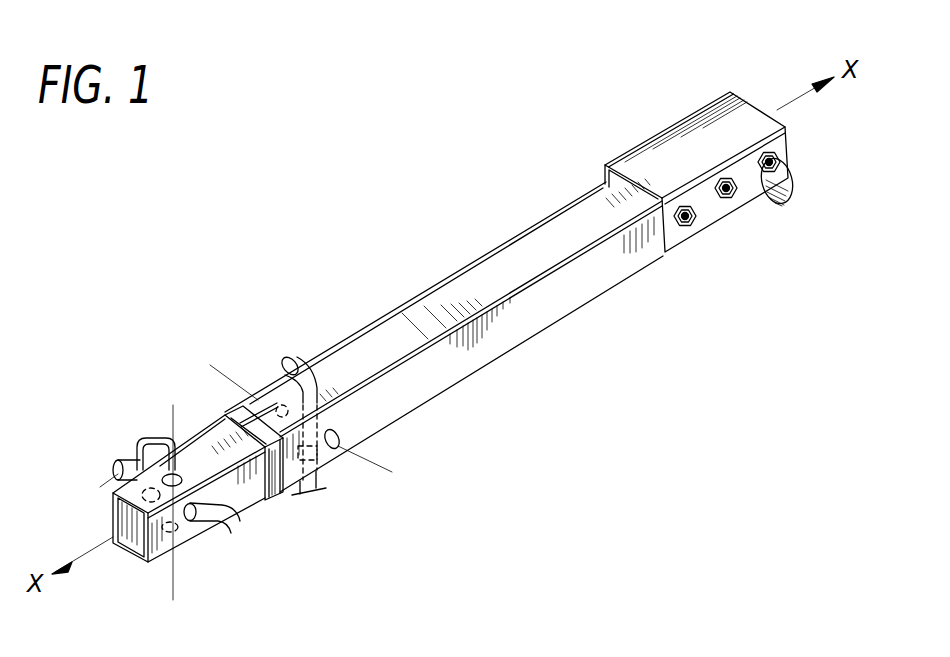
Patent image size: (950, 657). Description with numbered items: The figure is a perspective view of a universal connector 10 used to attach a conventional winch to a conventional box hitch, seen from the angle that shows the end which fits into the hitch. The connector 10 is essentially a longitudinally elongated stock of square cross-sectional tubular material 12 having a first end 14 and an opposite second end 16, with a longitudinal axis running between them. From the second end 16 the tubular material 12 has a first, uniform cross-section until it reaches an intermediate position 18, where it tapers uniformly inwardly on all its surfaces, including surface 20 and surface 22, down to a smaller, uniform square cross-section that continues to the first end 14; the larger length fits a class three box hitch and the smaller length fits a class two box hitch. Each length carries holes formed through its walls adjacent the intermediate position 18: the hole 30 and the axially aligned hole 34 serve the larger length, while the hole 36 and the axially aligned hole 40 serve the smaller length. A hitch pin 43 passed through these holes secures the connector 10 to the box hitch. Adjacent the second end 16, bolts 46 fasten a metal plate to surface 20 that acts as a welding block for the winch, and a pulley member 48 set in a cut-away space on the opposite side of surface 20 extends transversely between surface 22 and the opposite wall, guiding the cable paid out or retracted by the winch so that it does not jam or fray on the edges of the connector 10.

The universal connector 10 is at (400, 176).
The tubular material 12 is at (444, 335).
The first end 14 is at (113, 550).
The second end 16 is at (740, 93).
The intermediate position 18 is at (266, 500).
The surface 20 is at (462, 277).
The surface 22 is at (427, 388).
The hole 30 is at (334, 449).
The hole 34 is at (273, 404).
The hole 36 is at (176, 476).
The hole 40 is at (165, 548).
The hitch pin 43 is at (298, 360).
The bolts 46 is at (765, 190).
The pulley member 48 is at (790, 195).